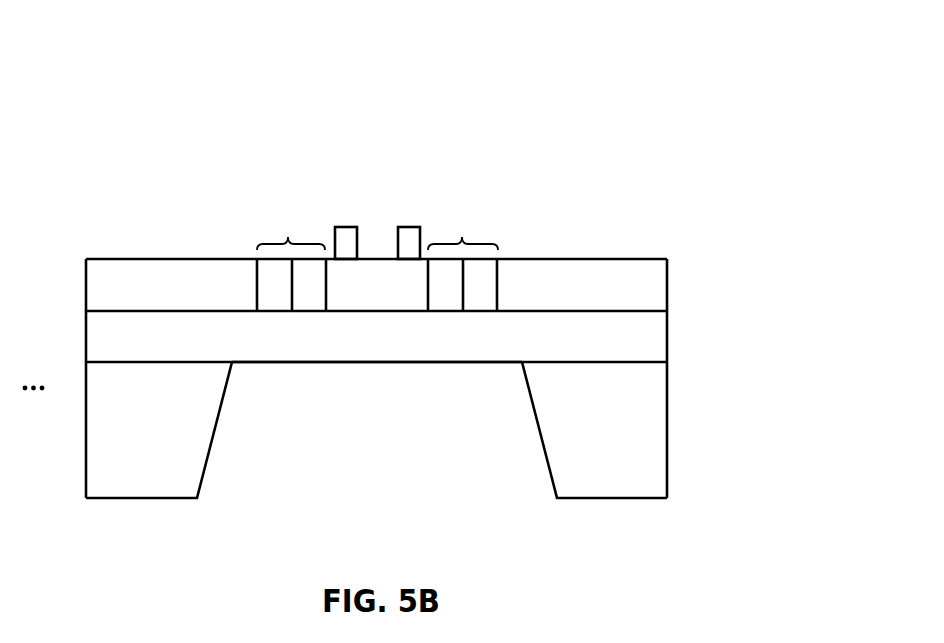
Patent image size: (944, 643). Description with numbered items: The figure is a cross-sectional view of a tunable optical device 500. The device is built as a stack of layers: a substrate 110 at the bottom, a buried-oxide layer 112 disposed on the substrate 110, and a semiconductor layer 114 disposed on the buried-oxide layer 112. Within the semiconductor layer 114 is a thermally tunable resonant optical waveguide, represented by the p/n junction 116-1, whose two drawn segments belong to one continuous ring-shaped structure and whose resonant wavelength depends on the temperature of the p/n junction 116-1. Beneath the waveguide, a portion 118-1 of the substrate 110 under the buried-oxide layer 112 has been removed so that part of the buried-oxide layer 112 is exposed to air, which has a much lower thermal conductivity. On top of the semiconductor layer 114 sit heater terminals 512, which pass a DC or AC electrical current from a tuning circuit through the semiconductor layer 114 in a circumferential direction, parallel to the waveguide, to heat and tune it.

The tunable optical device 500 is at (668, 79).
The semiconductor layer 114 is at (387, 283).
The buried-oxide layer 112 is at (627, 333).
The portion 118-1 is at (385, 414).
The substrate 110 is at (163, 448).
The p/n junction 116-1 is at (464, 233).
The heater terminals 512 is at (349, 248).